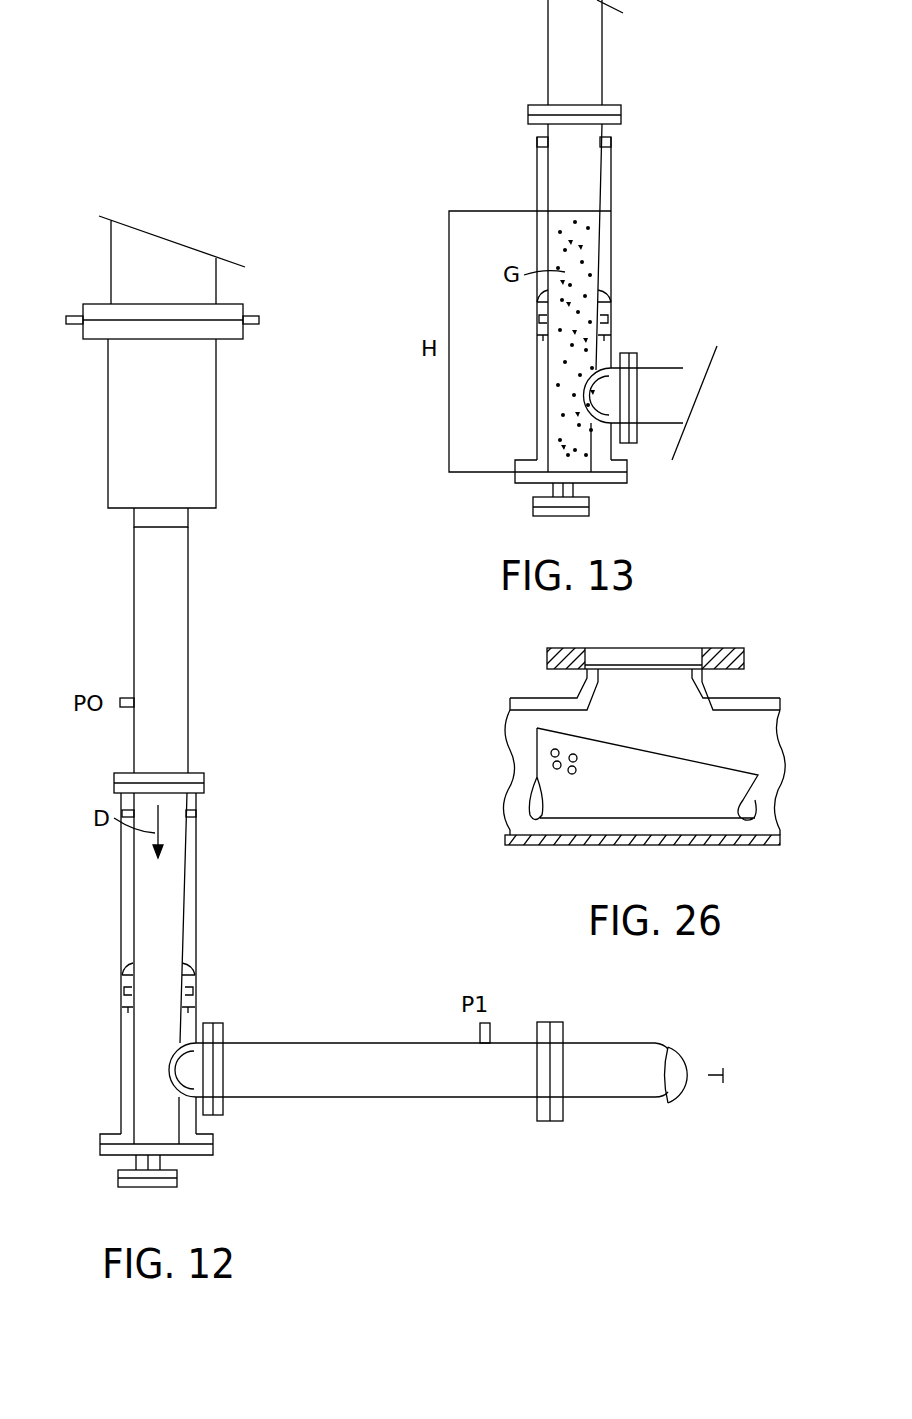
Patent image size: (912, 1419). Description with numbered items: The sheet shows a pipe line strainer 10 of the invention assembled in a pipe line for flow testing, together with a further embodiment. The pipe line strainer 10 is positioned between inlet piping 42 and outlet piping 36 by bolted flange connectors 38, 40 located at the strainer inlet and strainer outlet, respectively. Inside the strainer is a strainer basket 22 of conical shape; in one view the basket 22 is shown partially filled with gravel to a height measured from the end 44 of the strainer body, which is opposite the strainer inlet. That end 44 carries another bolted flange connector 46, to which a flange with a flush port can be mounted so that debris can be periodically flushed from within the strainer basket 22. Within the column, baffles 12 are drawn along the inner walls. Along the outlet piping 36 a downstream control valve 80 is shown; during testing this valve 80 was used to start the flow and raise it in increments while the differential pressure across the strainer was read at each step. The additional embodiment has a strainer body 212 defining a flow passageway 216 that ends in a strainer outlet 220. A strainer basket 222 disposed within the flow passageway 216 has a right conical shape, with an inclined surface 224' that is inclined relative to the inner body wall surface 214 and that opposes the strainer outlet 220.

In FIG. 12, the pipe line strainer 10 is at (173, 968).
In FIG. 13, the pipe line strainer 10 is at (602, 298).
In FIG. 12, the baffle 12 is at (196, 972).
In FIG. 12, the strainer basket 22 is at (143, 1030).
In FIG. 13, the strainer basket 22 is at (600, 236).
In FIG. 12, the outlet piping 36 is at (237, 1042).
In FIG. 13, the outlet piping 36 is at (655, 366).
In FIG. 12, the bolted flange connector 38 is at (196, 795).
In FIG. 12, the bolted flange connector 40 is at (210, 1115).
In FIG. 12, the inlet piping 42 is at (190, 751).
In FIG. 13, the inlet piping 42 is at (604, 82).
In FIG. 12, the end of the strainer body 44 is at (98, 1118).
In FIG. 12, the bolted flange connector 46 is at (213, 1142).
In FIG. 12, the downstream control valve 80 is at (709, 1062).
In FIG. 26, the strainer body 212 is at (770, 698).
In FIG. 26, the inner body wall surface 214 is at (515, 710).
In FIG. 26, the flow passageway 216 is at (772, 767).
In FIG. 26, the strainer outlet 220 is at (650, 648).
In FIG. 26, the strainer basket 222 is at (710, 812).
In FIG. 26, the inclined surface 224' is at (643, 769).